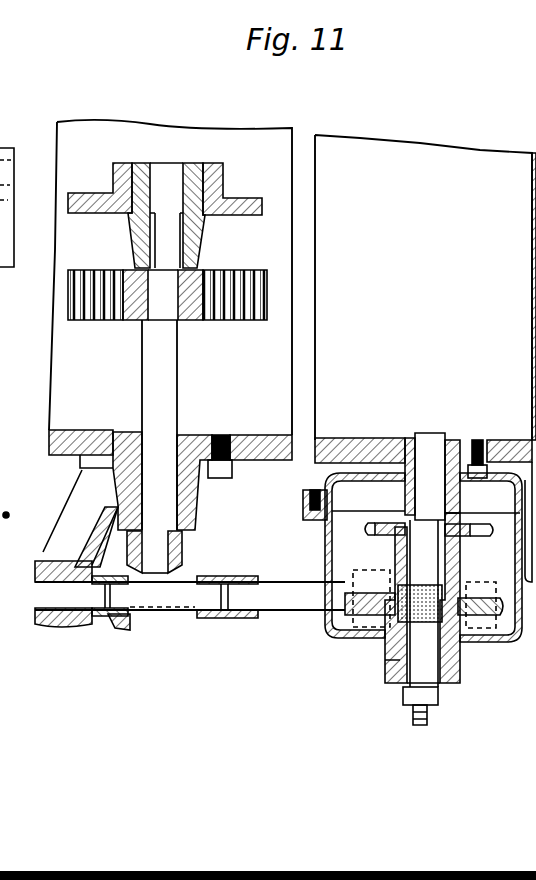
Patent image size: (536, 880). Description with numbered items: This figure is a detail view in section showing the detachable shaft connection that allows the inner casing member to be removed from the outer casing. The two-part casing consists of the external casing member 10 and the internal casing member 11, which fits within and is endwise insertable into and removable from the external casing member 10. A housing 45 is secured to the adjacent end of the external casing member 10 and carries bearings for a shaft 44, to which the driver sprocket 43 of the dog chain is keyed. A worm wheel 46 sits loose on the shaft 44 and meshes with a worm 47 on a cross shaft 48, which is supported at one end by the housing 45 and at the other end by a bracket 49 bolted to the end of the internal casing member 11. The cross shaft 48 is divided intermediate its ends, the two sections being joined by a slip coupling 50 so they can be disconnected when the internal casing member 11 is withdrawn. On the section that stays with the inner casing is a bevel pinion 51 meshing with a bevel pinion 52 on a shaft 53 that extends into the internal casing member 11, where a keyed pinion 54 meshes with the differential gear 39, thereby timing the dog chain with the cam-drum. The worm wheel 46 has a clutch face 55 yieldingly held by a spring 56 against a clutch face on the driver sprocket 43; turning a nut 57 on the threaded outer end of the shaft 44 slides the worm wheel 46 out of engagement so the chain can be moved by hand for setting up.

The external casing member 10 is at (362, 438).
The internal casing member 11 is at (258, 435).
The differential gear 39 is at (232, 323).
The driver sprocket 43 is at (369, 525).
The shaft 44 is at (433, 445).
The housing 45 is at (472, 637).
The worm wheel 46 is at (370, 575).
The worm 47 is at (387, 643).
The cross shaft 48 is at (287, 607).
The bracket 49 is at (82, 498).
The slip coupling 50 is at (253, 567).
The bevel pinion 51 is at (117, 627).
The bevel pinion 52 is at (183, 562).
The shaft 53 is at (173, 355).
The pinion 54 is at (127, 321).
The clutch face 55 is at (458, 594).
The spring 56 is at (453, 566).
The nut 57 is at (405, 697).